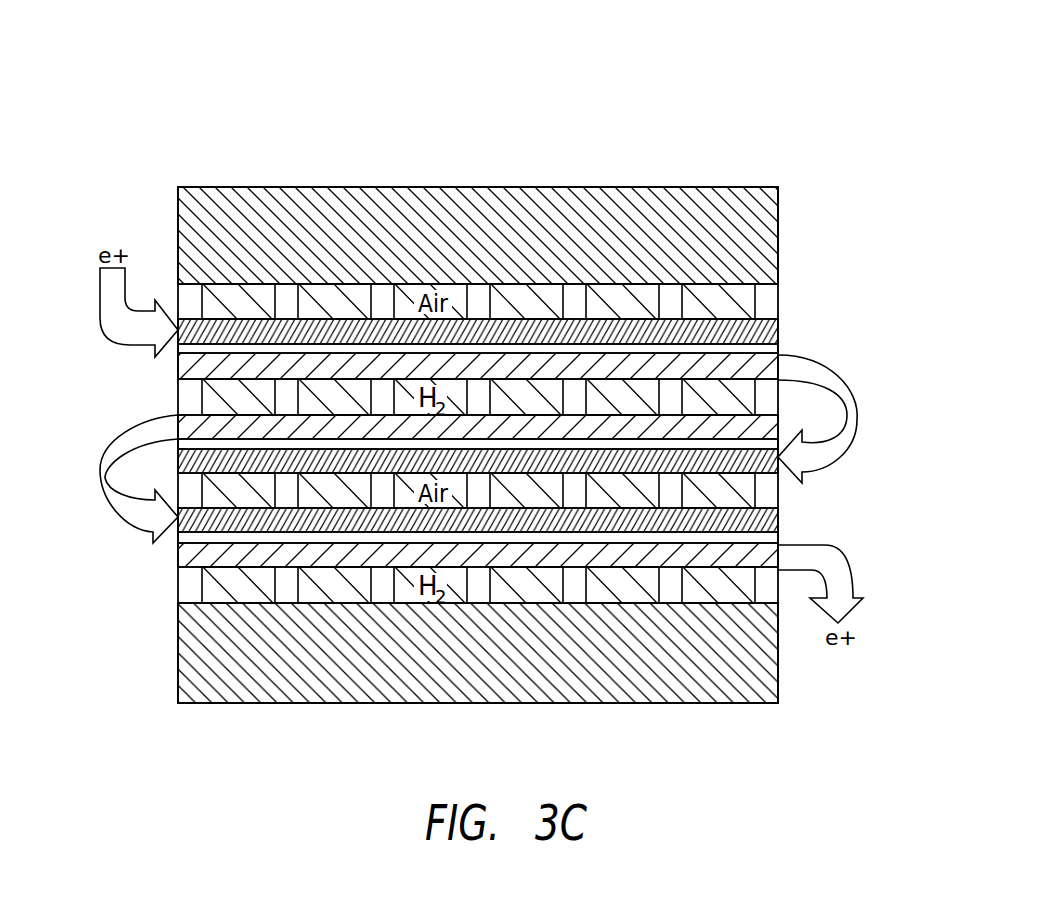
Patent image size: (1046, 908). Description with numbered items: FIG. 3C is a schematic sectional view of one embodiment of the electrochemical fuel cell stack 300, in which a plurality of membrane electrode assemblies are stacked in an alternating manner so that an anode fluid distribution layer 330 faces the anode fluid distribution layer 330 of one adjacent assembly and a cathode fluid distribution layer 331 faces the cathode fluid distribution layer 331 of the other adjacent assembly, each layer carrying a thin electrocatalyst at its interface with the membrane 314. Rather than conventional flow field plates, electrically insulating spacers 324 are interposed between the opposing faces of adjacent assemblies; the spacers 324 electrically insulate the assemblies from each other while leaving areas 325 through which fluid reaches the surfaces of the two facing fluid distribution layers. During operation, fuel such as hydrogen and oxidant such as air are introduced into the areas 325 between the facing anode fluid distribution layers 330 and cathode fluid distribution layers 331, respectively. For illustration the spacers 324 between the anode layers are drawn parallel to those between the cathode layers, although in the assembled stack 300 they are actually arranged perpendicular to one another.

The fuel cell stack 300 is at (708, 41).
The membrane 314 is at (776, 538).
The electrically insulating spacers 324 is at (333, 393).
The areas 325 is at (570, 398).
The anode fluid distribution layer 330 is at (193, 424).
The cathode fluid distribution layer 331 is at (178, 442).